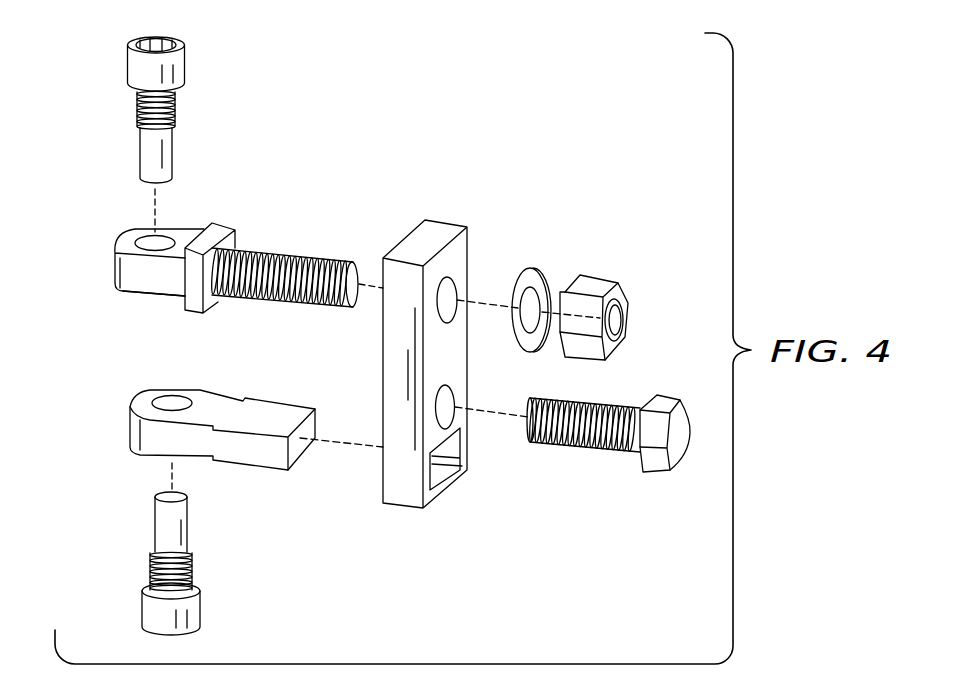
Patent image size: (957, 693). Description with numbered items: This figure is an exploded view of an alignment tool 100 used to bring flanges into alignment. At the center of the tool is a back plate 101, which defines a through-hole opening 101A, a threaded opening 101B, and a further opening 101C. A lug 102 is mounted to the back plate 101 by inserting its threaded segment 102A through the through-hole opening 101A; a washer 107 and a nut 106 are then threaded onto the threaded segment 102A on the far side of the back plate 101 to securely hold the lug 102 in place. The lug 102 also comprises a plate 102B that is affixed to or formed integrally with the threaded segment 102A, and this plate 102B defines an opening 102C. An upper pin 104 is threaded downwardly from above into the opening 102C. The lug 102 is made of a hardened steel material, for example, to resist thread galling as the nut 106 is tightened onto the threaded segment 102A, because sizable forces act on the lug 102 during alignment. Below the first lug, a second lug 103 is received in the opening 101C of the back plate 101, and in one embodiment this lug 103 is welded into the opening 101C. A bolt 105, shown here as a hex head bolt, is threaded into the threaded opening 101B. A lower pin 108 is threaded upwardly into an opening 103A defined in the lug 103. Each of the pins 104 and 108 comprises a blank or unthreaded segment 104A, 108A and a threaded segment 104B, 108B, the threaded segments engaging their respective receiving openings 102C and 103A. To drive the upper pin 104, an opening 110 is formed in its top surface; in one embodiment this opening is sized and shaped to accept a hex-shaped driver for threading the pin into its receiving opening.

The alignment tool 100 is at (474, 101).
The back plate 101 is at (440, 222).
The through-hole opening 101A is at (452, 290).
The threaded opening 101B is at (450, 405).
The opening 101C is at (440, 472).
The lug 102 is at (115, 268).
The threaded segment 102A is at (270, 250).
The plate 102B is at (158, 298).
The opening 102C is at (165, 240).
The lug 103 is at (130, 430).
The opening 103A is at (175, 405).
The pin 104 is at (186, 62).
The blank or unthreaded segment 104A is at (175, 143).
The threaded segment 104B is at (137, 106).
The bolt 105 is at (590, 450).
The nut 106 is at (620, 290).
The washer 107 is at (545, 275).
The pin 108 is at (200, 605).
The blank or unthreaded segment 108A is at (190, 522).
The threaded segment 108B is at (150, 563).
The opening 110 is at (160, 40).